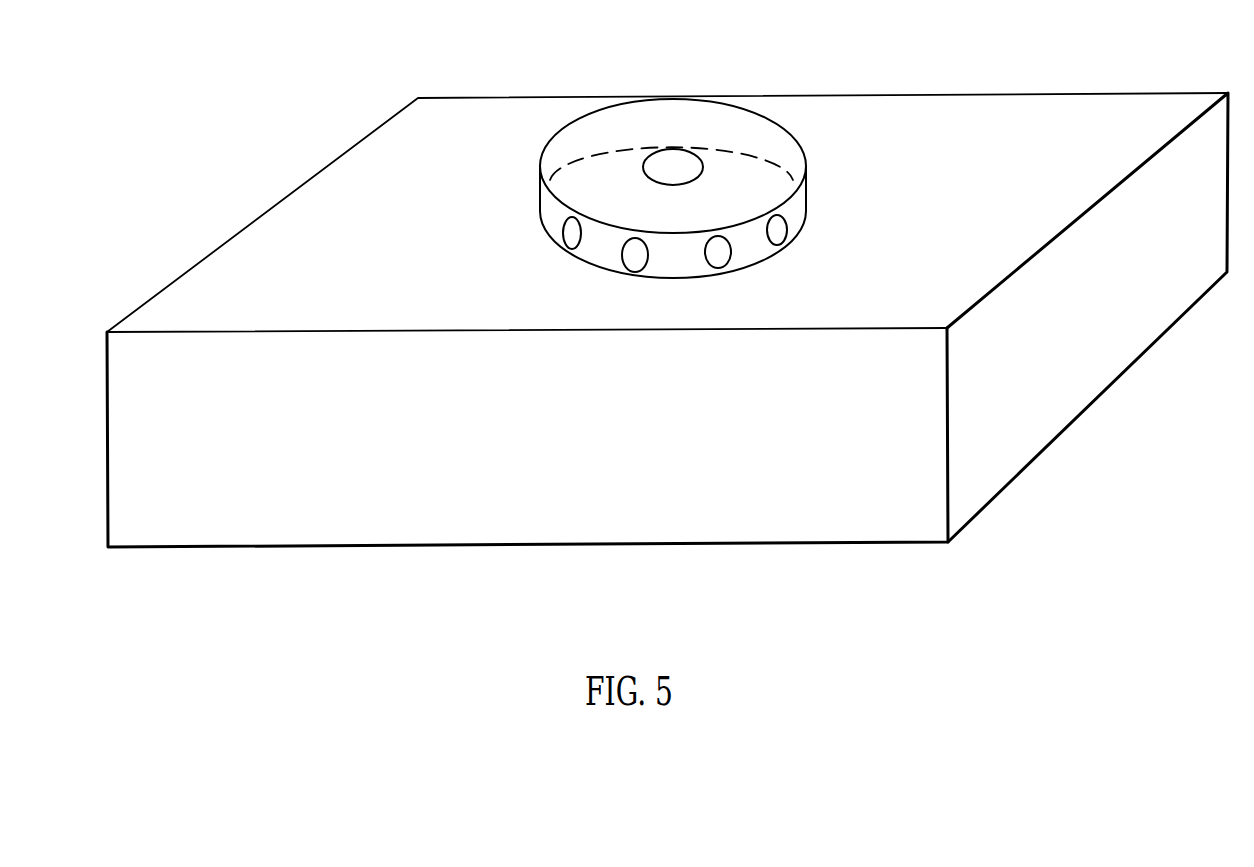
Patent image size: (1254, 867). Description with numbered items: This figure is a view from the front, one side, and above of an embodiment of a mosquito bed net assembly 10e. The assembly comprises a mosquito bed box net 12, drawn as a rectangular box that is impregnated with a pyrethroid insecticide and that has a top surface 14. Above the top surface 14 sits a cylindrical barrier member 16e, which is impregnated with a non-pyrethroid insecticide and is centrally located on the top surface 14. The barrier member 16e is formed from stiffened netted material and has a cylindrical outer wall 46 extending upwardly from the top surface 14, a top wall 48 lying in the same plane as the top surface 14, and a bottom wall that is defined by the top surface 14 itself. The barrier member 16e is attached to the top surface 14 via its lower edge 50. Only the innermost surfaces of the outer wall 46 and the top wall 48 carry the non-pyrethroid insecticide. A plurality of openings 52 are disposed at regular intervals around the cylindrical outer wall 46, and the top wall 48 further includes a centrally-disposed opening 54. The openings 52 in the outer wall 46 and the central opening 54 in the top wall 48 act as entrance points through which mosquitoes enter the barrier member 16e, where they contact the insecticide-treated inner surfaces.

The mosquito bed net assembly 10e is at (362, 119).
The mosquito bed box net 12 is at (455, 513).
The top surface 14 is at (1020, 108).
The cylindrical barrier member 16e is at (547, 148).
The cylindrical outer wall 46 is at (745, 248).
The top wall 48 is at (788, 148).
The lower edge 50 is at (577, 257).
The openings 52 is at (637, 257).
The centrally-disposed opening 54 is at (686, 157).